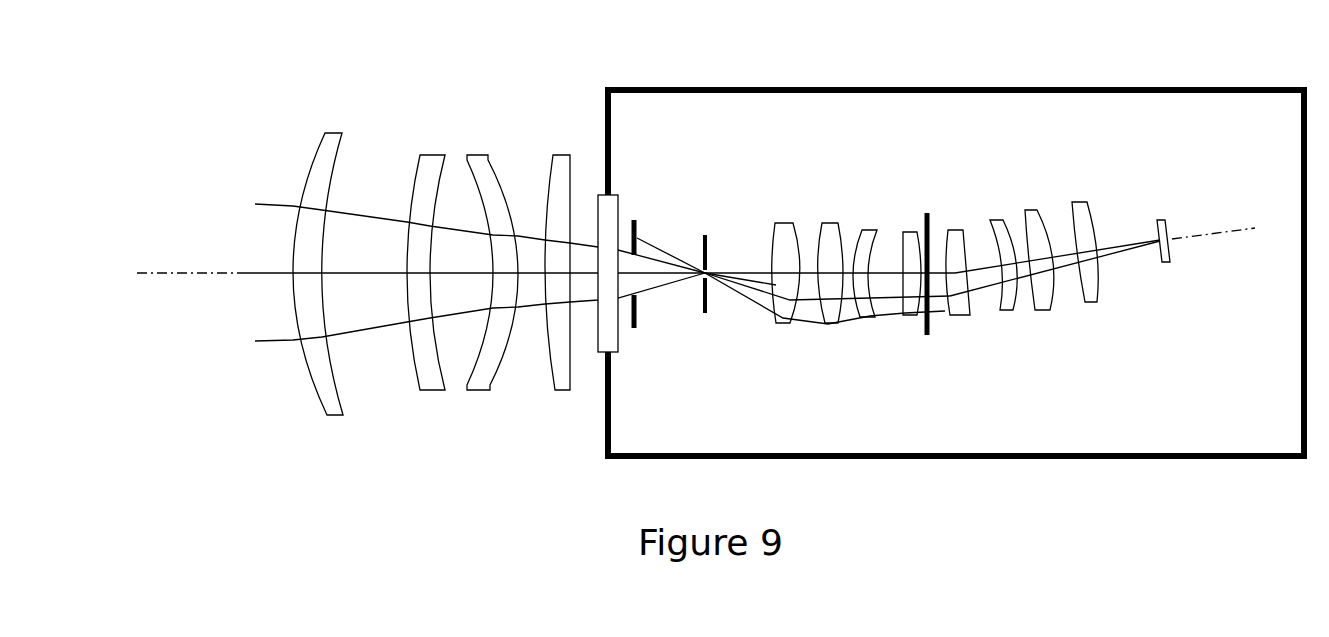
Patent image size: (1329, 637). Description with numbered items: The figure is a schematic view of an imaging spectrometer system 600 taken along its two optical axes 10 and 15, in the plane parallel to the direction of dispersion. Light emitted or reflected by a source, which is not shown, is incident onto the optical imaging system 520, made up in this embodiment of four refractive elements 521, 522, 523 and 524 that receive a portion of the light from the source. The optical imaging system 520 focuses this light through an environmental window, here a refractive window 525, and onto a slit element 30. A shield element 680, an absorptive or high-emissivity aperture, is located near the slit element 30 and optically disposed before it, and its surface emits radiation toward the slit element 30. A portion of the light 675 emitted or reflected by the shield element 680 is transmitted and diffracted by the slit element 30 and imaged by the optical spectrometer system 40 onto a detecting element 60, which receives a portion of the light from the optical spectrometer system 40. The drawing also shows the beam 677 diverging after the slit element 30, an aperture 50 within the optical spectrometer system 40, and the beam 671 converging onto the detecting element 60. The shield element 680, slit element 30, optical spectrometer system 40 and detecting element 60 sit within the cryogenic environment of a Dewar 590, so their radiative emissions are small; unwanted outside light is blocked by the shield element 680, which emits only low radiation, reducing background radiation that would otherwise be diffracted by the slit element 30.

The imaging spectrometer system 600 is at (210, 84).
The optical axis 10 is at (173, 275).
The optical axis 15 is at (1218, 235).
The optical imaging system 520 is at (582, 118).
The refractive element 521 is at (335, 416).
The refractive element 522 is at (432, 391).
The refractive element 523 is at (480, 391).
The refractive element 524 is at (558, 391).
The refractive window 525 is at (619, 340).
The Dewar 590 is at (742, 88).
The light 675 is at (640, 252).
The shield element 680 is at (638, 312).
The slit element 30 is at (706, 231).
The light beam 677 is at (753, 292).
The optical spectrometer system 40 is at (1100, 192).
The aperture stop 50 is at (926, 340).
The light beam 671 is at (1105, 258).
The detecting element 60 is at (1170, 232).